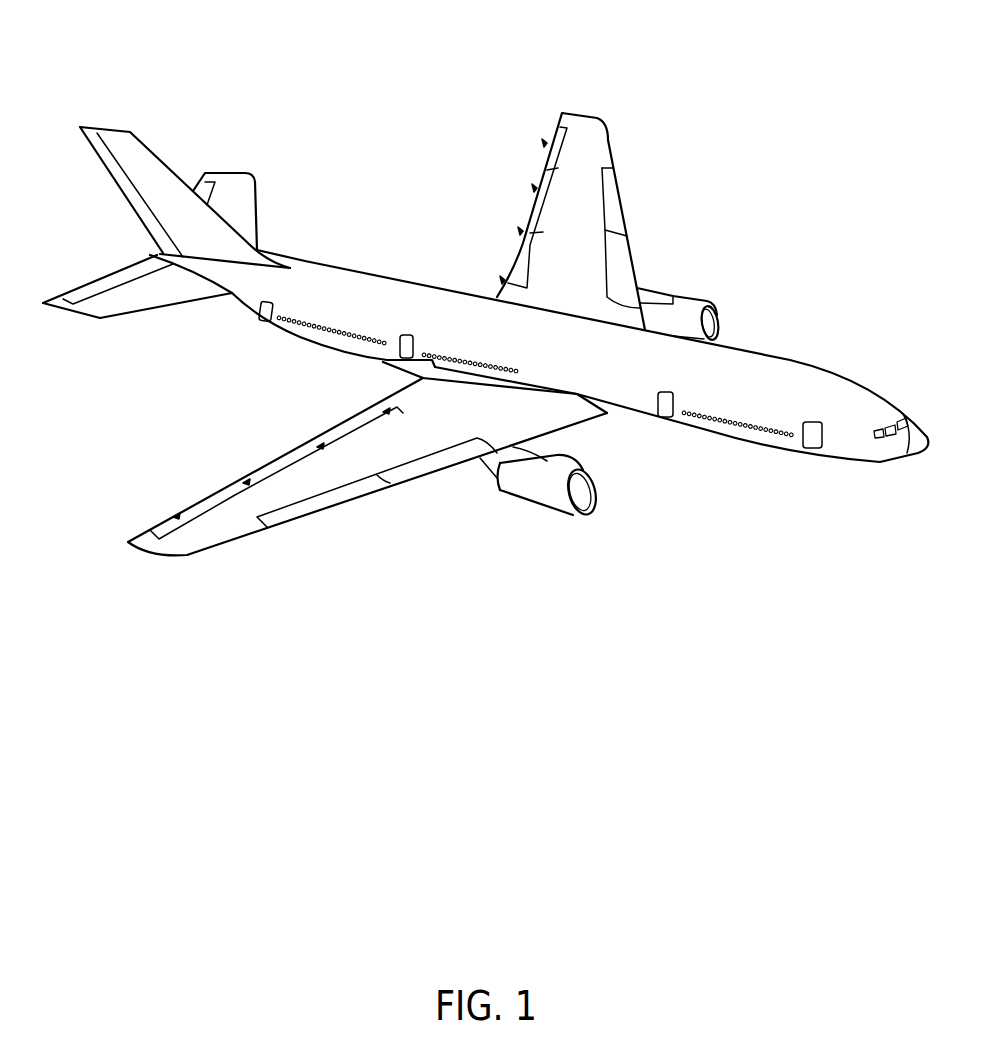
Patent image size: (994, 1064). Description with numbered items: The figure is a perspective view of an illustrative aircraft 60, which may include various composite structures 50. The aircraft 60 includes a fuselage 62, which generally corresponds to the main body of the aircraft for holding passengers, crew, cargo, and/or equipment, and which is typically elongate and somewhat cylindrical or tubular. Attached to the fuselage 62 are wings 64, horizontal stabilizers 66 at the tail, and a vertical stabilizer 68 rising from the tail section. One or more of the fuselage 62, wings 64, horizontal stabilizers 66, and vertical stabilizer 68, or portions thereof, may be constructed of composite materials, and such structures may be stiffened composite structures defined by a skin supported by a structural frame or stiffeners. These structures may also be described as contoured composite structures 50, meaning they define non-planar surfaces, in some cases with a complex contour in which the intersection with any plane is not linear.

The composite structures 50 is at (395, 48).
The aircraft 60 is at (846, 209).
The fuselage 62 is at (373, 270).
The wings 64 is at (610, 142).
The horizontal stabilizers 66 is at (256, 187).
The vertical stabilizer 68 is at (131, 134).